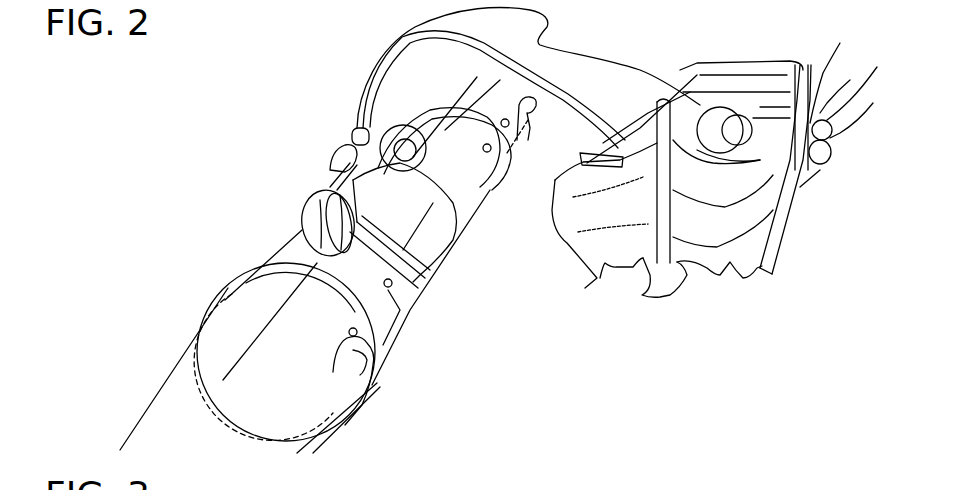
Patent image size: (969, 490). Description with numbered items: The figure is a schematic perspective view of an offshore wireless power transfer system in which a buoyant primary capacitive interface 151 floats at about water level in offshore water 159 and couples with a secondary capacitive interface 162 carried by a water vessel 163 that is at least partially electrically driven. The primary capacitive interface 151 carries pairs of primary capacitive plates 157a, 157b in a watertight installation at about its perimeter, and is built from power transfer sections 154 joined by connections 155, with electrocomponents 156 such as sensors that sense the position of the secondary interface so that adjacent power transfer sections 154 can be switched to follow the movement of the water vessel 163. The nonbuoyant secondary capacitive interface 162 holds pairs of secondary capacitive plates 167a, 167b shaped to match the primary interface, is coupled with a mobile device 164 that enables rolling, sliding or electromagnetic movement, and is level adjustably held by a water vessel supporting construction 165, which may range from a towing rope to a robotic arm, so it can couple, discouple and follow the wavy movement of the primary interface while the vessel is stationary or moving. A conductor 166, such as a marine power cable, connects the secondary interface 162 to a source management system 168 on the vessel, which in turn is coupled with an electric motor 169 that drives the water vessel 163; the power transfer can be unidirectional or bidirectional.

The buoyant primary capacitive interface 151 is at (163, 322).
The power transfer sections 154 is at (478, 242).
The connections 155 is at (458, 112).
The electrocomponents 156 is at (391, 289).
The primary capacitive plate 157a is at (237, 307).
The primary capacitive plate 157b is at (330, 385).
The offshore water 159 is at (693, 352).
The secondary capacitive interface 162 is at (413, 216).
The water vessel 163 is at (782, 278).
The mobile device 164 is at (327, 153).
The water vessel supporting construction 165 is at (350, 65).
The conductor 166 is at (617, 40).
The secondary capacitive plate 167a is at (300, 235).
The secondary capacitive plate 167b is at (420, 275).
The source management system 168 is at (773, 143).
The electric motor 169 is at (713, 118).